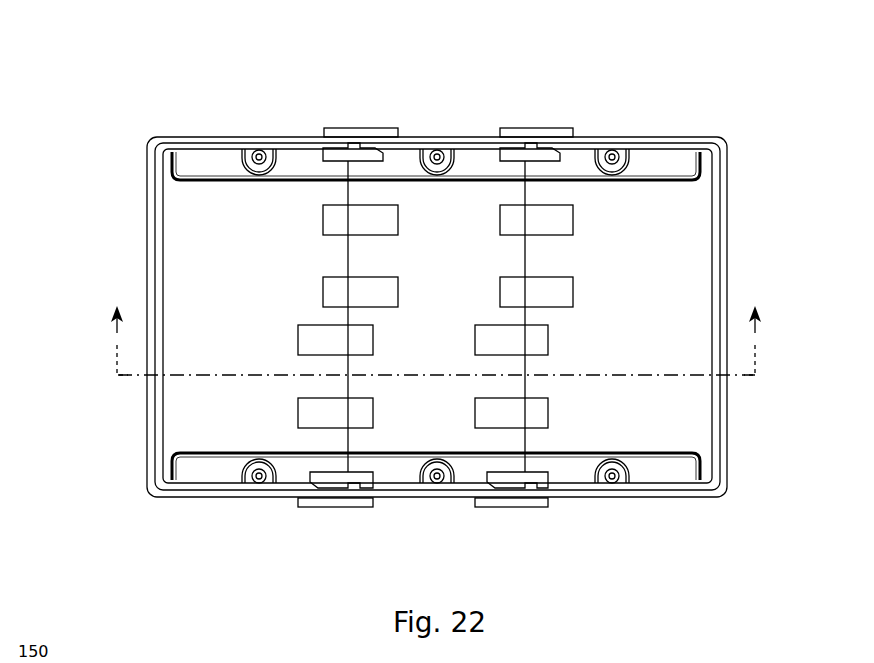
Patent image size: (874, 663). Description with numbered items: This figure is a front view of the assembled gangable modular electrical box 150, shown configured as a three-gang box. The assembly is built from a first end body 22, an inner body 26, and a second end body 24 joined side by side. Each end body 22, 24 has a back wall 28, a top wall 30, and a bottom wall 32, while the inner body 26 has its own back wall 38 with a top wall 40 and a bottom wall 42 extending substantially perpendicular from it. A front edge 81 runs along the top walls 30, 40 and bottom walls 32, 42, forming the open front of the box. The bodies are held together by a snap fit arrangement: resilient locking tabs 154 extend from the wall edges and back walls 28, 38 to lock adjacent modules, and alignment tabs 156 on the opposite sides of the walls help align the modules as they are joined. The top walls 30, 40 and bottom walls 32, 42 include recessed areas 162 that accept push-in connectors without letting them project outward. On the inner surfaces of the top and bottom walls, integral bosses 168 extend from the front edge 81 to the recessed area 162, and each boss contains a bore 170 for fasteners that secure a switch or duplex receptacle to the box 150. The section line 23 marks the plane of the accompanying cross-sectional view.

The gangable modular electrical box 150 is at (116, 110).
The top wall 30 is at (190, 137).
The front edge 81 is at (720, 242).
The bottom wall 32 is at (474, 137).
The recessed area 162 is at (698, 452).
The first end body 22 is at (247, 137).
The inner body 26 is at (436, 137).
The second end body 24 is at (629, 137).
The top wall 40 is at (200, 492).
The bottom wall 42 is at (466, 492).
The integral boss 168 is at (610, 470).
The bore 170 is at (259, 148).
The back wall 38 is at (436, 316).
The alignment tab 156 is at (530, 137).
The resilient locking tab 154 is at (358, 482).
The back wall 28 is at (436, 293).
The section line 23 is at (435, 340).